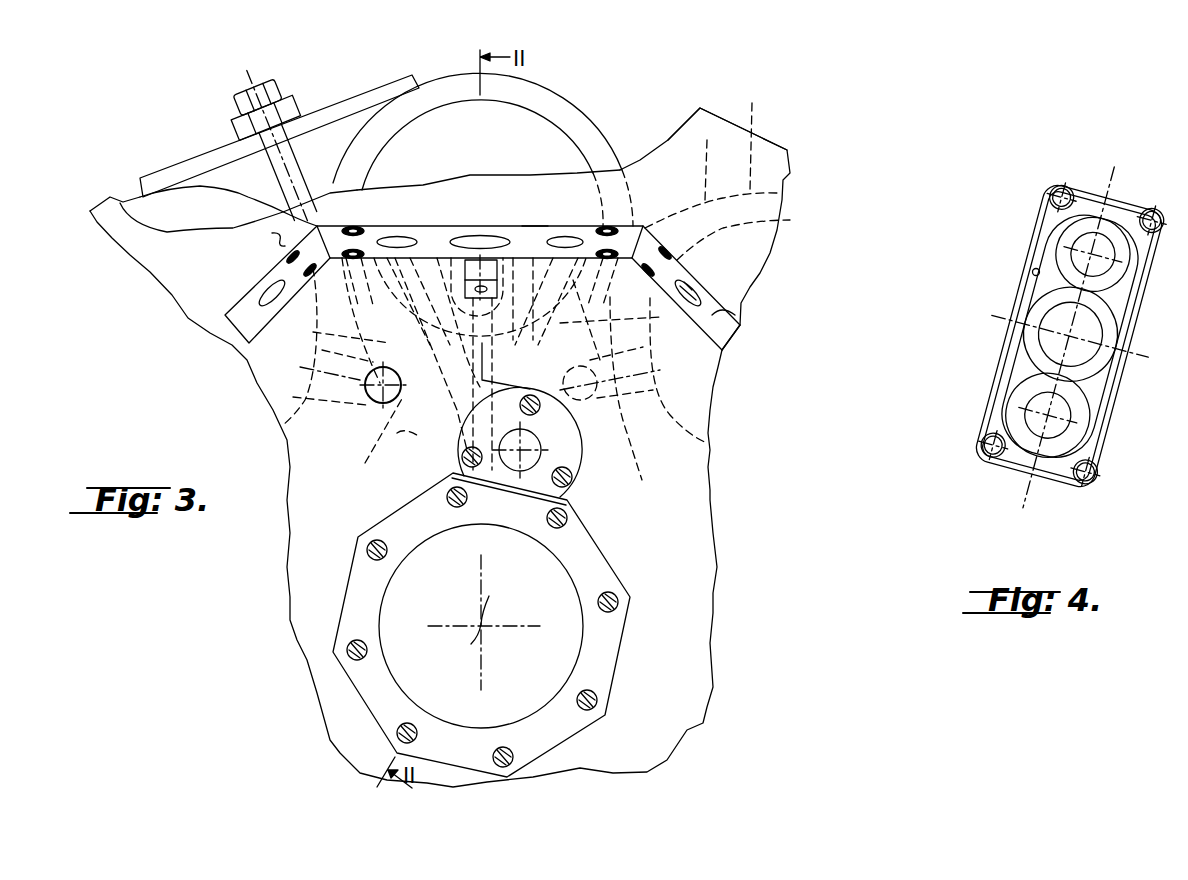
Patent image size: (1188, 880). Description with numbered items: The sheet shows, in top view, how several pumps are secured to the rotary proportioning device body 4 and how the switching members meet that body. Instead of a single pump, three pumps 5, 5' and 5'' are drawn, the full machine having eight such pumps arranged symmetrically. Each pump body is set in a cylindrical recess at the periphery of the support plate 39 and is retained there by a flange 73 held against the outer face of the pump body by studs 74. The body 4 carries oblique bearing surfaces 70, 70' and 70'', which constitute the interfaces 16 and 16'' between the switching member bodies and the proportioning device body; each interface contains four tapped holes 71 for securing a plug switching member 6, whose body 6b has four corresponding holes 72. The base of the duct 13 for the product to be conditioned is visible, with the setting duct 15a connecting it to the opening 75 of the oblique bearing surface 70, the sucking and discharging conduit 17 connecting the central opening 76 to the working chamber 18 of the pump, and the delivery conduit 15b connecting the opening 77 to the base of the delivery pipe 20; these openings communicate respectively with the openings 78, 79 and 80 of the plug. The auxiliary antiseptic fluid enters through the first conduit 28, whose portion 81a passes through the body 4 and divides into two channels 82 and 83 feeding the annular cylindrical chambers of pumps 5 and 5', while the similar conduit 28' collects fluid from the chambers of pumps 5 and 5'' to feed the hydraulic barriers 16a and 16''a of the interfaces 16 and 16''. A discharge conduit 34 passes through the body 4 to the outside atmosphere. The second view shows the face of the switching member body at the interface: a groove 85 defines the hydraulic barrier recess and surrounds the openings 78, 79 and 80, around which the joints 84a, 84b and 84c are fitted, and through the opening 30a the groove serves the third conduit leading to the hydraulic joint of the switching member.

In FIG. 3, the proportioning device body 4 is at (713, 498).
In FIG. 3, the pump 5 is at (483, 141).
In FIG. 3, the pump 5' is at (231, 184).
In FIG. 3, the pump 5'' is at (725, 180).
In FIG. 3, the duct for supply of product 13 is at (481, 625).
In FIG. 3, the setting duct 15a is at (429, 362).
In FIG. 3, the delivery conduit 15b is at (633, 380).
In FIG. 3, the interface 16 is at (480, 203).
In FIG. 3, the hydraulic barrier 16a is at (530, 222).
In FIG. 3, the interface 16'' is at (696, 288).
In FIG. 3, the hydraulic barrier 16''a is at (760, 321).
In FIG. 3, the sucking and discharging conduit 17 is at (499, 282).
In FIG. 3, the working chamber 18 is at (480, 225).
In FIG. 3, the delivery pipe 20 is at (541, 447).
In FIG. 3, the first conduit 28 is at (373, 402).
In FIG. 3, the conduit 28' is at (615, 427).
In FIG. 3, the discharge conduit 34 is at (473, 338).
In FIG. 3, the support plate 39 is at (273, 241).
In FIG. 3, the oblique bearing surface 70 is at (521, 244).
In FIG. 3, the oblique bearing surface 70' is at (259, 294).
In FIG. 3, the oblique bearing surface 70'' is at (702, 276).
In FIG. 3, the tapped holes 71 is at (610, 228).
In FIG. 3, the flange 73 is at (338, 98).
In FIG. 3, the studs 74 is at (278, 88).
In FIG. 3, the opening 75 is at (402, 236).
In FIG. 3, the central opening 76 is at (477, 236).
In FIG. 3, the opening 77 is at (568, 236).
In FIG. 3, the portion of first conduit 81a is at (364, 439).
In FIG. 3, the channel 82 is at (305, 401).
In FIG. 3, the channel 83 is at (323, 337).
In FIG. 4, the switching member 6 is at (990, 360).
In FIG. 4, the body of the switching member 6b is at (1097, 198).
In FIG. 4, the opening 30a is at (1034, 269).
In FIG. 4, the holes 72 is at (1057, 196).
In FIG. 4, the opening 78 is at (1047, 407).
In FIG. 4, the opening 79 is at (1070, 323).
In FIG. 4, the opening 80 is at (1060, 222).
In FIG. 4, the joint 84a is at (1022, 422).
In FIG. 4, the joint 84b is at (1037, 323).
In FIG. 4, the joint 84c is at (1067, 246).
In FIG. 4, the groove 85 is at (1017, 342).